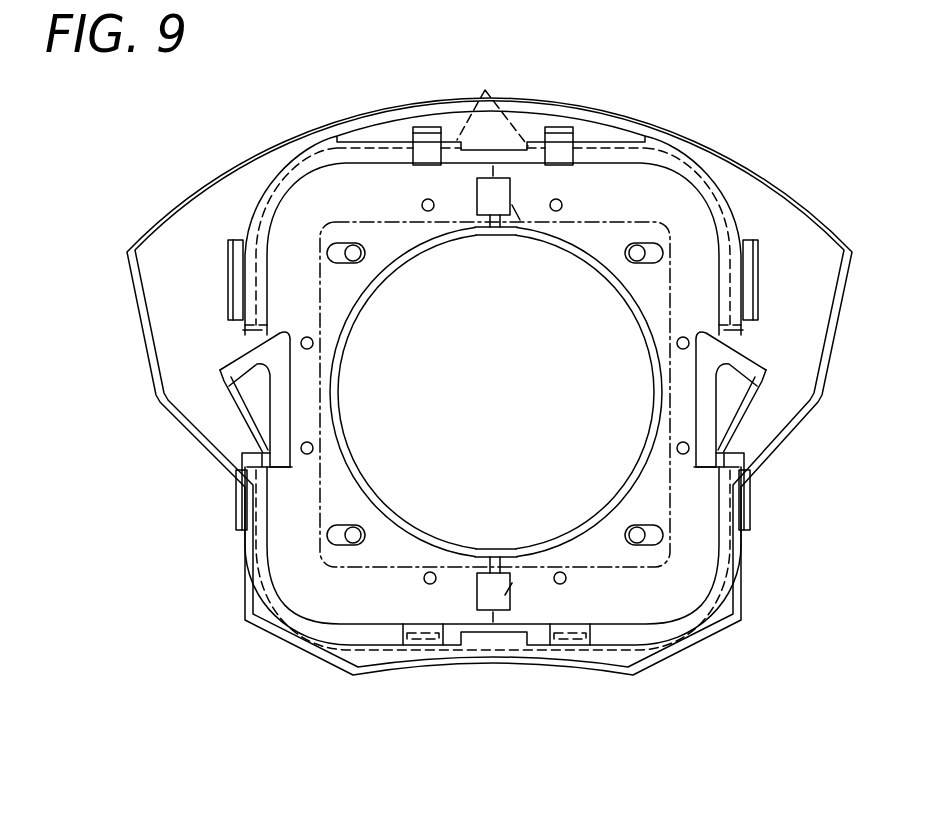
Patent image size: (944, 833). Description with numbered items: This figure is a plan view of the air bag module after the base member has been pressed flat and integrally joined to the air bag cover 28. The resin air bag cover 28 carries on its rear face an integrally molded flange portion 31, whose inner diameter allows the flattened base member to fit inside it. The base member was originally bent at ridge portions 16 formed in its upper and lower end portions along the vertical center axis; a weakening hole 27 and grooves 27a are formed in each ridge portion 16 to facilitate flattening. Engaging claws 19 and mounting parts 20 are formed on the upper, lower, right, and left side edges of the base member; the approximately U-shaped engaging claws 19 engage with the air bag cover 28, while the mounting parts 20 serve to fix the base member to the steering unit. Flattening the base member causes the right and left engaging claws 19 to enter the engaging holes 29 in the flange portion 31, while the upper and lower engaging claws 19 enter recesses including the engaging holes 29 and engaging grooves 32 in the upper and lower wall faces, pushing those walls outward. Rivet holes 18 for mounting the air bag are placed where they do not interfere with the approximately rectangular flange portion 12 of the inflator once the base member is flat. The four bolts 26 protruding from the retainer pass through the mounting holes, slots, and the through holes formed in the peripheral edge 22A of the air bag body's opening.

The flange portion 12 is at (665, 130).
The ridge portion 16 is at (495, 217).
The rivet hole 18 is at (425, 199).
The engaging claw 19 is at (230, 255).
The mounting part 20 is at (238, 418).
The peripheral edge 22A is at (348, 332).
The bolt 26 is at (353, 250).
The weakening hole 27 is at (478, 212).
The groove 27a is at (517, 215).
The air bag cover 28 is at (272, 152).
The engaging hole 29 is at (120, 310).
The flange portion 31 is at (290, 585).
The engaging groove 32 is at (412, 648).